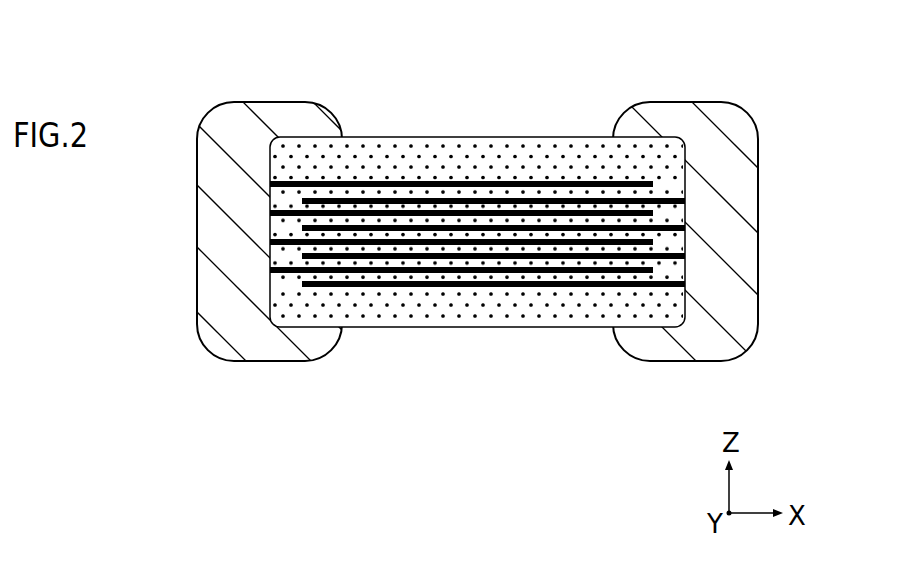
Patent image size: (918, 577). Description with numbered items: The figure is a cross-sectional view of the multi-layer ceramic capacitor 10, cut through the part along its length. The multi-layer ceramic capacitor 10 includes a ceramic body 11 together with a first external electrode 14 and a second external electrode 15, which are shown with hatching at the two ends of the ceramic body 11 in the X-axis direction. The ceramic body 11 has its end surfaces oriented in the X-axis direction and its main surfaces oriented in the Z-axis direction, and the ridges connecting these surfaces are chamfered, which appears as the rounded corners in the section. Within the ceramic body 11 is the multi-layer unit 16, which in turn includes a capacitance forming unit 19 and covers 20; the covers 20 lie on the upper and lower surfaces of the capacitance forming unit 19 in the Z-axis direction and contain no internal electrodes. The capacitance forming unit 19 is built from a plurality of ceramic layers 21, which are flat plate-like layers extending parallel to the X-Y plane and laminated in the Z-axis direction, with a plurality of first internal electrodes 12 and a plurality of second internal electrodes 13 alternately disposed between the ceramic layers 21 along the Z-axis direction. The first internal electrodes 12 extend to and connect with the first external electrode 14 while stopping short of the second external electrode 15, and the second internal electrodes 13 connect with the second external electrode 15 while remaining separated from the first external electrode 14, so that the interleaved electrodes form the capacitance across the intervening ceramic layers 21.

The multi-layer ceramic capacitor 10 is at (220, 73).
The ceramic body 11 is at (455, 72).
The first internal electrode 12 is at (367, 267).
The second internal electrode 13 is at (542, 280).
The first external electrode 14 is at (213, 230).
The second external electrode 15 is at (758, 232).
The multi-layer unit 16 is at (422, 317).
The capacitance forming unit 19 is at (692, 182).
The cover 20 is at (692, 138).
The ceramic layer 21 is at (460, 237).